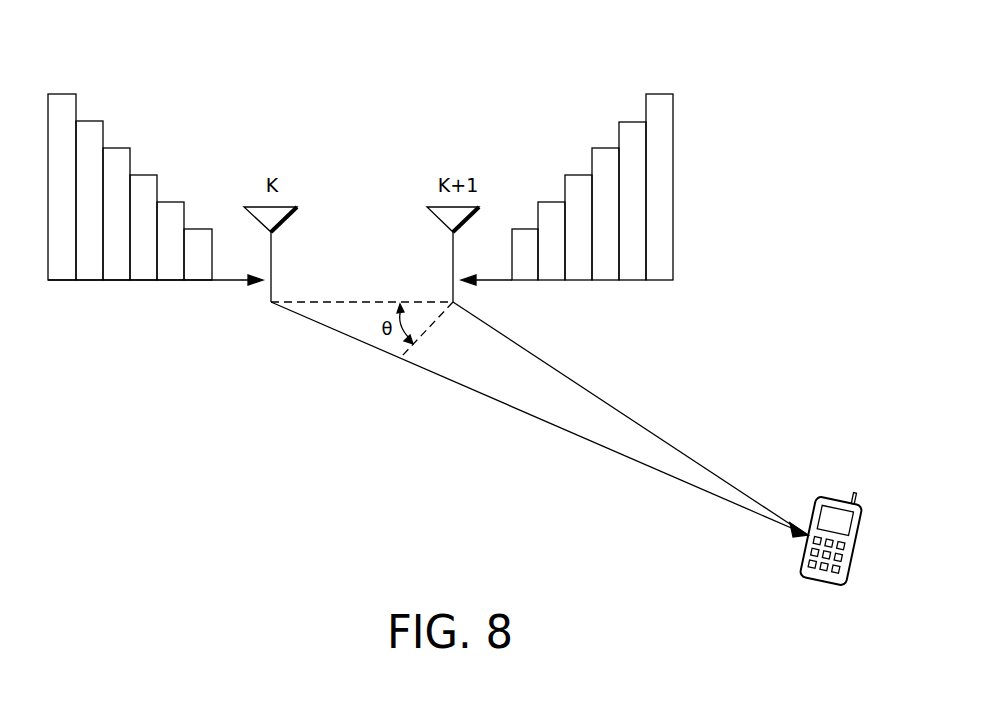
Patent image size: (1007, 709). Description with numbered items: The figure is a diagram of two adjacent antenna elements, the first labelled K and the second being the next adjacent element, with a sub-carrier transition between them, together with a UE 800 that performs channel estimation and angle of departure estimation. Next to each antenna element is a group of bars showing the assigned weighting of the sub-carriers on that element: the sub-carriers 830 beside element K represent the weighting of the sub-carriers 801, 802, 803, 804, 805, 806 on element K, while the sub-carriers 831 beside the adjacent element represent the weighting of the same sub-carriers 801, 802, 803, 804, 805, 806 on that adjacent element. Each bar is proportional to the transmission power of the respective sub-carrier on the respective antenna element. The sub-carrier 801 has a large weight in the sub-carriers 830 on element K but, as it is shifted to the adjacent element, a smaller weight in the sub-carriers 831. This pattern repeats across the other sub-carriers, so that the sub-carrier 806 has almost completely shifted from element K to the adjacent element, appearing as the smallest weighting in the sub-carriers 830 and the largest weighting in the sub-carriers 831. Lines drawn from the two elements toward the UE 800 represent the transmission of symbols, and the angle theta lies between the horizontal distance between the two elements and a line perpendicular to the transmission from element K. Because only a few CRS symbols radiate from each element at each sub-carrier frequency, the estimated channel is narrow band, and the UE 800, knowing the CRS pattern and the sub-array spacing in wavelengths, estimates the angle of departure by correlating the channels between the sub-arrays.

The UE 800 is at (858, 503).
The sub-carrier 801 is at (63, 281).
The sub-carrier 802 is at (89, 120).
The sub-carrier 803 is at (115, 281).
The sub-carrier 804 is at (144, 174).
The sub-carrier 805 is at (172, 281).
The sub-carrier 806 is at (198, 228).
The sub-carriers on element K 830 is at (94, 350).
The sub-carriers on element K+1 831 is at (734, 53).